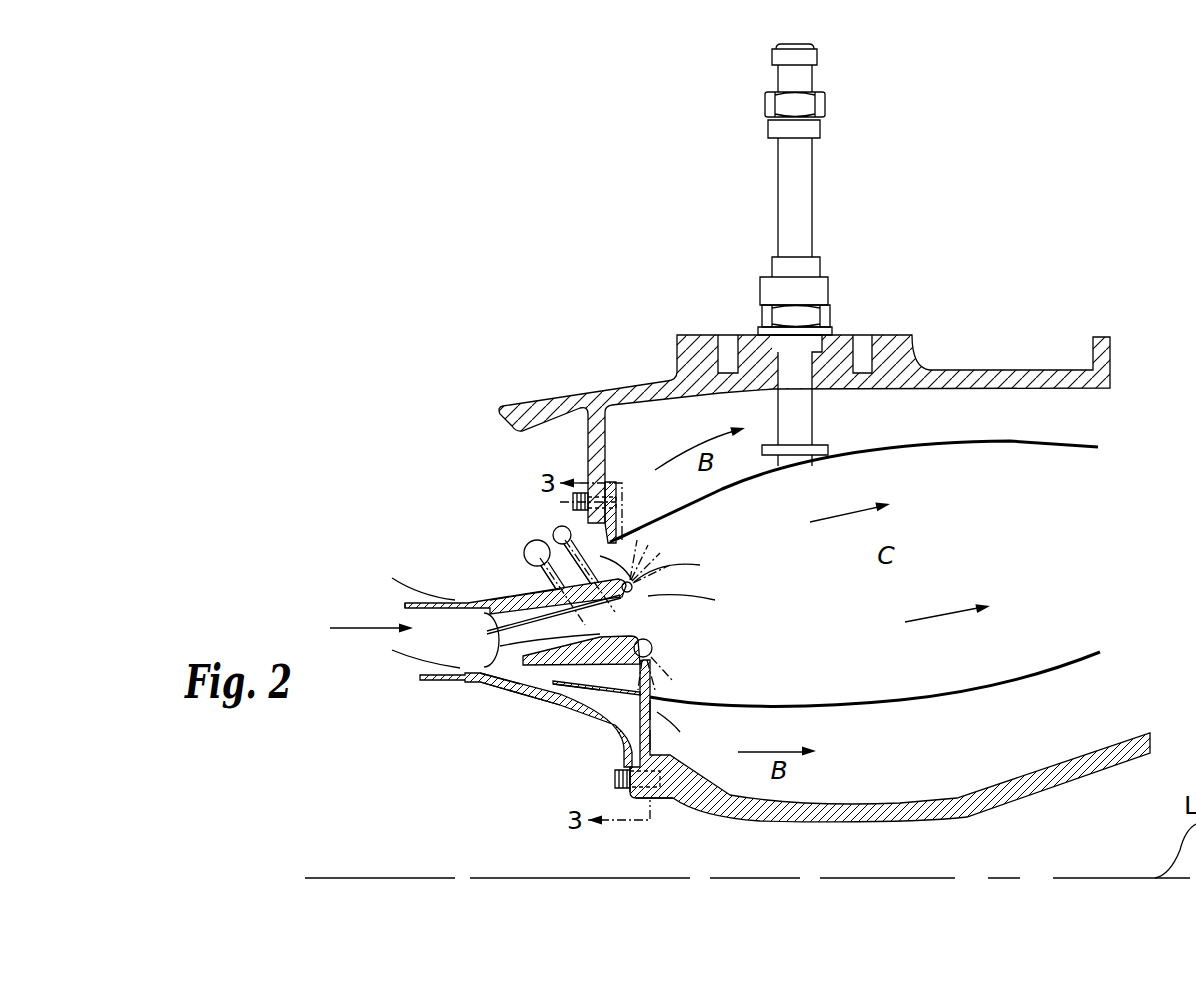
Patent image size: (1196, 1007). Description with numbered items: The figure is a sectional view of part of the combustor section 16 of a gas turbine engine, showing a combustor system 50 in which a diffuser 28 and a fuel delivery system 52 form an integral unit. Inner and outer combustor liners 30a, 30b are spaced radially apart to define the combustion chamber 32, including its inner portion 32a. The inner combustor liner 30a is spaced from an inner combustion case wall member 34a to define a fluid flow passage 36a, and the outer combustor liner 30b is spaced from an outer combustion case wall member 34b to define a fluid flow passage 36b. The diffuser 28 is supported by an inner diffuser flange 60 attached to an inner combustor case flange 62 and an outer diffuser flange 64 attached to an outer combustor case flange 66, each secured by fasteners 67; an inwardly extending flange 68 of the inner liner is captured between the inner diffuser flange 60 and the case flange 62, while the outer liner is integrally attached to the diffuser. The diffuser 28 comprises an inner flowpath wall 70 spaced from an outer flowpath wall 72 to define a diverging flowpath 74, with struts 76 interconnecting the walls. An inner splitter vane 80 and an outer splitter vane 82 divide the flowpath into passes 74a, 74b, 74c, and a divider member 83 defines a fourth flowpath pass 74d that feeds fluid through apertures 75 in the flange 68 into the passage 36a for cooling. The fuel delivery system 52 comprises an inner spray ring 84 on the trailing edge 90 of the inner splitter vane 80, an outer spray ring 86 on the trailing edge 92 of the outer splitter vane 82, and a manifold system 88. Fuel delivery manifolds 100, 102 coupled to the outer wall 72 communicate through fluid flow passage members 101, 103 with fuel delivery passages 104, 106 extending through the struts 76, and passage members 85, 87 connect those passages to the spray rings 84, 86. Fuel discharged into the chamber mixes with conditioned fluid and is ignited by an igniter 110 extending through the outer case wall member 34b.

The combustor section 16 is at (1117, 786).
The diffuser 28 is at (466, 697).
The inner combustor liner 30a is at (982, 700).
The outer combustor liner 30b is at (1023, 444).
The combustion chamber 32 is at (982, 549).
The inner portion of combustion chamber 32a is at (794, 646).
The inner combustion case wall member 34a is at (972, 805).
The outer combustion case wall member 34b is at (1008, 368).
The inner fluid flow passage 36a is at (881, 764).
The outer fluid flow passage 36b is at (881, 432).
The combustor system 50 is at (446, 413).
The fuel delivery system 52 is at (652, 603).
The inner diffuser flange 60 is at (627, 760).
The inner combustor case flange 62 is at (660, 803).
The outer diffuser flange 64 is at (609, 482).
The outer combustor case flange 66 is at (587, 414).
The fasteners 67 is at (572, 502).
The inwardly extending flange 68 is at (642, 803).
The inner flowpath wall 70 is at (545, 703).
The outer flowpath wall 72 is at (468, 603).
The flowpath 74 is at (434, 639).
The flowpath pass 74a is at (430, 603).
The flowpath pass 74b is at (420, 676).
The flowpath pass 74c is at (662, 685).
The fourth flowpath pass 74d is at (652, 742).
The apertures 75 is at (655, 706).
The struts 76 is at (487, 660).
The inner splitter vane 80 is at (478, 700).
The outer splitter vane 82 is at (415, 605).
The divider member 83 is at (587, 688).
The inner spray ring 84 is at (665, 634).
The fluid flow passage member 85 is at (668, 652).
The outer spray ring 86 is at (648, 589).
The fluid flow passage member 87 is at (612, 627).
The manifold system 88 is at (522, 505).
The trailing edge of inner splitter vane 90 is at (662, 678).
The trailing edge of outer splitter vane 92 is at (658, 565).
The fuel delivery manifold 100 is at (524, 553).
The fluid flow passage member 101 is at (540, 576).
The fuel delivery manifold 102 is at (552, 535).
The fluid flow passage member 103 is at (577, 522).
The fuel delivery passage 104 is at (517, 685).
The fuel delivery passage 106 is at (632, 530).
The igniter 110 is at (812, 194).